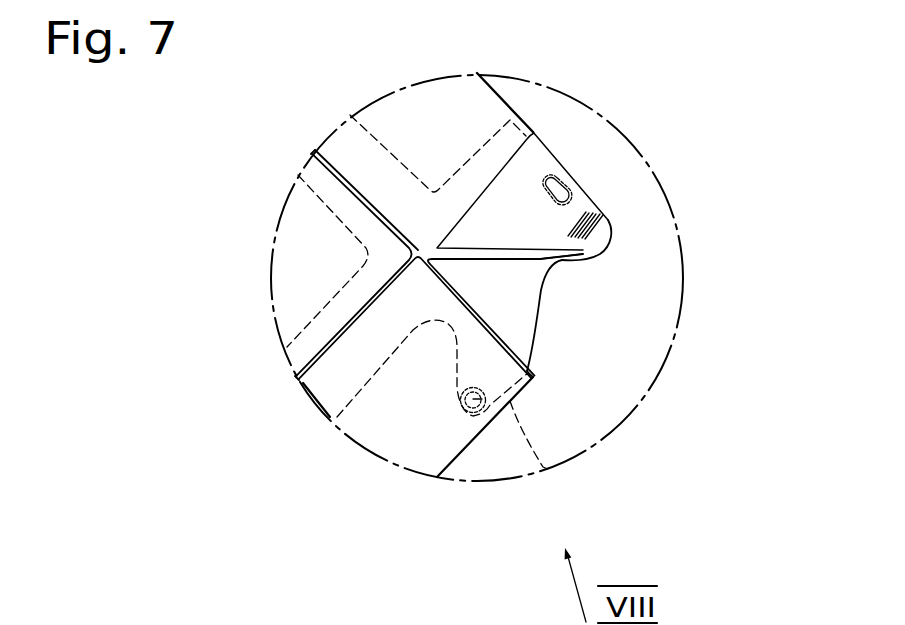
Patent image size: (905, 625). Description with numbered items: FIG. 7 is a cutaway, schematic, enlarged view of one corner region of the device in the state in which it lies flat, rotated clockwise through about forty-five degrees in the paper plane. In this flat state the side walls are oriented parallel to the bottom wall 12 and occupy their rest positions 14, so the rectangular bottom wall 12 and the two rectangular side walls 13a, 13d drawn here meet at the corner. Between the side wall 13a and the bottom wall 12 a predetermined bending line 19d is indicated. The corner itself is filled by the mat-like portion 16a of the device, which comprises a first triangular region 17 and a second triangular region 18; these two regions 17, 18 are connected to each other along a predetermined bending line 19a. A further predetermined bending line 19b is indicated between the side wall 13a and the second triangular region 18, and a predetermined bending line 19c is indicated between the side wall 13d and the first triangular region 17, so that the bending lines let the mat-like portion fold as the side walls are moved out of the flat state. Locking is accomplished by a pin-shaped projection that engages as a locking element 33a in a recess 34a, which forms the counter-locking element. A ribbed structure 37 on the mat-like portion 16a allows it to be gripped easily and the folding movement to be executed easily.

The bottom wall 12 is at (318, 262).
The side wall 13a is at (440, 430).
The side wall 13d is at (437, 117).
The rest position 14 is at (602, 145).
The mat-like portion 16a is at (558, 288).
The first triangular region 17 is at (547, 223).
The second triangular region 18 is at (507, 302).
The predetermined bending line 19a is at (557, 263).
The predetermined bending line 19b is at (517, 350).
The predetermined bending line 19c is at (510, 167).
The predetermined bending line 19d is at (343, 343).
The locking element 33a is at (545, 472).
The recess 34a is at (573, 182).
The ribbed structure 37 is at (612, 225).